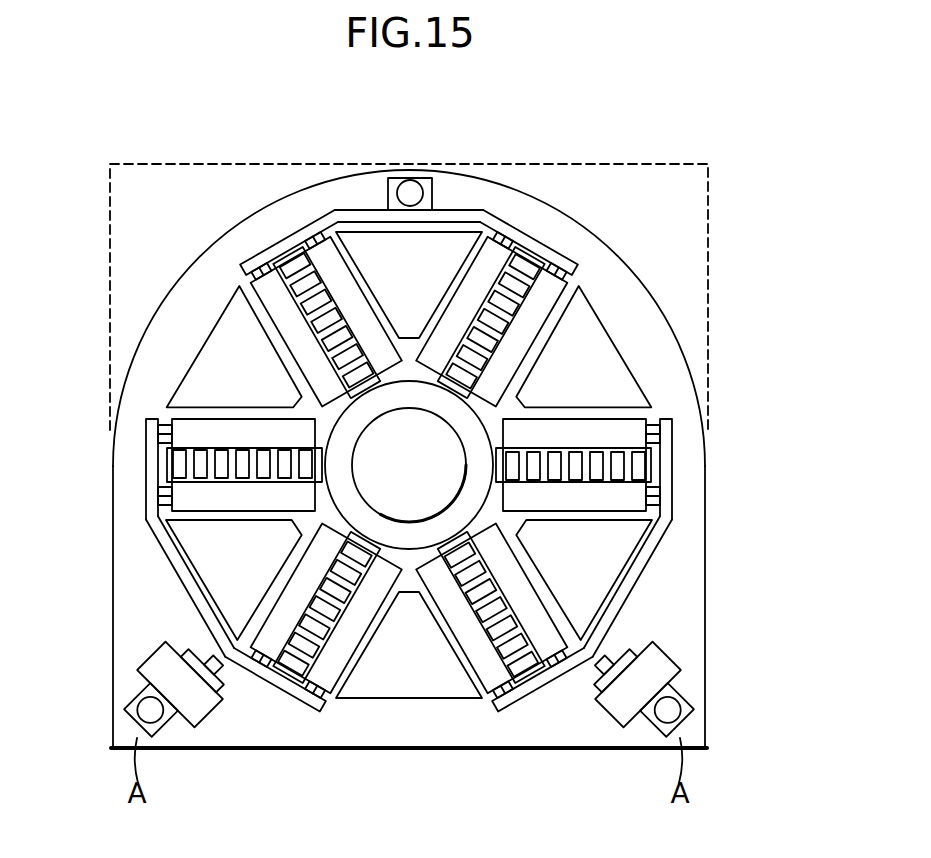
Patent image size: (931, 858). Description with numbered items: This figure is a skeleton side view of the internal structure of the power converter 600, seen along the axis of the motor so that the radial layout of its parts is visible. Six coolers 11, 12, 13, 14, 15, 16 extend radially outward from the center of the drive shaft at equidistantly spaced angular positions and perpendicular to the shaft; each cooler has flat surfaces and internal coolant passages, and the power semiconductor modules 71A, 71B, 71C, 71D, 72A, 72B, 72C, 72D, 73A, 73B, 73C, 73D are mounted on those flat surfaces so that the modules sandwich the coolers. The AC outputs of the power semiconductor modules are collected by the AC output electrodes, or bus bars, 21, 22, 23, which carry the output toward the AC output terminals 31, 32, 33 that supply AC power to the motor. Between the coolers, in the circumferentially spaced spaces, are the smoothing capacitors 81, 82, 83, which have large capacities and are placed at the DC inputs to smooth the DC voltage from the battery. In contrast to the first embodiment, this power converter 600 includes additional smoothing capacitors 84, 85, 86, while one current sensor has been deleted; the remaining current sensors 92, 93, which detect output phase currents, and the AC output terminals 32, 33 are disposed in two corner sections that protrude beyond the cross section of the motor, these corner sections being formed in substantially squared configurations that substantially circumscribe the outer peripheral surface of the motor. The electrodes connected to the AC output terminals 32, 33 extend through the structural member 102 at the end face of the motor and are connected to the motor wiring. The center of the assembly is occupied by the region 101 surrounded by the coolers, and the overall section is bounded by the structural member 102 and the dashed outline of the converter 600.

The power converter 600 is at (731, 190).
The rotor 101 is at (405, 397).
The structural member 102 is at (681, 368).
The cooler 11 is at (533, 258).
The cooler 12 is at (288, 258).
The cooler 13 is at (167, 467).
The cooler 14 is at (290, 672).
The cooler 15 is at (528, 672).
The cooler 16 is at (651, 467).
The AC output electrode 21 is at (460, 212).
The AC output electrode 22 is at (158, 548).
The AC output electrode 23 is at (660, 548).
The AC output terminal 31 is at (410, 180).
The AC output terminal 32 is at (150, 712).
The AC output terminal 33 is at (668, 712).
The power semiconductor module 71A is at (562, 278).
The power semiconductor module 71B is at (490, 248).
The power semiconductor module 71C is at (331, 247).
The power semiconductor module 71D is at (257, 278).
The power semiconductor module 72A is at (185, 432).
The power semiconductor module 72B is at (185, 496).
The power semiconductor module 72C is at (260, 664).
The power semiconductor module 72D is at (318, 695).
The power semiconductor module 73A is at (504, 695).
The power semiconductor module 73B is at (558, 664).
The power semiconductor module 73C is at (634, 496).
The power semiconductor module 73D is at (634, 432).
The smoothing capacitor 81 is at (610, 355).
The smoothing capacitor 82 is at (207, 355).
The smoothing capacitor 83 is at (408, 696).
The smoothing capacitor 84 is at (362, 240).
The smoothing capacitor 85 is at (207, 570).
The smoothing capacitor 86 is at (612, 570).
The current sensor 92 is at (185, 708).
The current sensor 93 is at (633, 708).